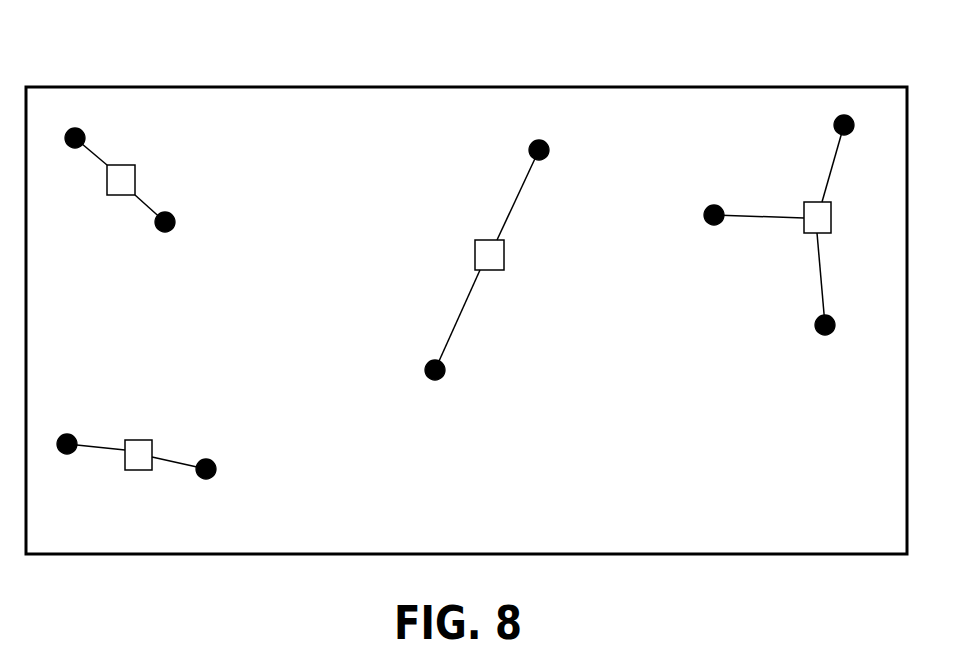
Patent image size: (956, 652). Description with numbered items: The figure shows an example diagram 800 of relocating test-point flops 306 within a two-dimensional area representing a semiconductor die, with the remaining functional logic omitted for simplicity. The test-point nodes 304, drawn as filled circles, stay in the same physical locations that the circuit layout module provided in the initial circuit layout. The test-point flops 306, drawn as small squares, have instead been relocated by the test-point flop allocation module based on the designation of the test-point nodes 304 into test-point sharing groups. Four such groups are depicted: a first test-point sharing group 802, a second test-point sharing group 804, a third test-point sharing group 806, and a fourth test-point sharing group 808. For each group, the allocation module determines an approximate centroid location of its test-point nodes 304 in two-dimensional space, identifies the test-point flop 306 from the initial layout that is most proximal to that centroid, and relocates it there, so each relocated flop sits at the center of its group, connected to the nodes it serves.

The diagram 800 is at (77, 29).
The first test-point sharing group 802 is at (206, 196).
The second test-point sharing group 804 is at (178, 395).
The third test-point sharing group 806 is at (542, 282).
The fourth test-point sharing group 808 is at (742, 297).
The test-point nodes 304 is at (78, 128).
The test-point flops 306 is at (125, 163).